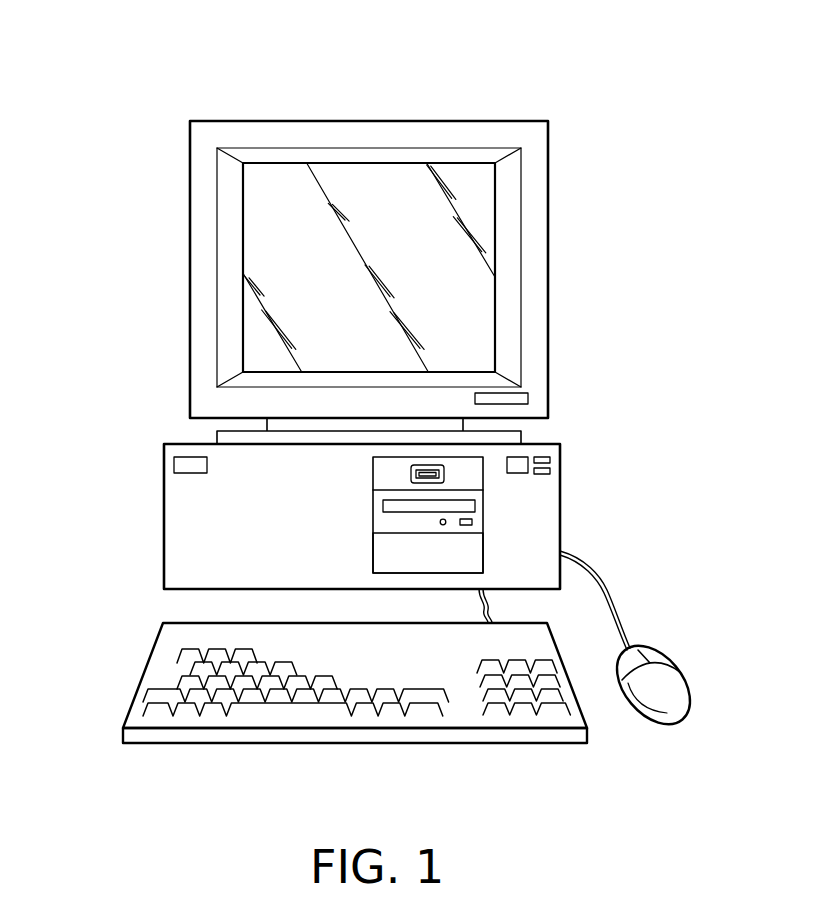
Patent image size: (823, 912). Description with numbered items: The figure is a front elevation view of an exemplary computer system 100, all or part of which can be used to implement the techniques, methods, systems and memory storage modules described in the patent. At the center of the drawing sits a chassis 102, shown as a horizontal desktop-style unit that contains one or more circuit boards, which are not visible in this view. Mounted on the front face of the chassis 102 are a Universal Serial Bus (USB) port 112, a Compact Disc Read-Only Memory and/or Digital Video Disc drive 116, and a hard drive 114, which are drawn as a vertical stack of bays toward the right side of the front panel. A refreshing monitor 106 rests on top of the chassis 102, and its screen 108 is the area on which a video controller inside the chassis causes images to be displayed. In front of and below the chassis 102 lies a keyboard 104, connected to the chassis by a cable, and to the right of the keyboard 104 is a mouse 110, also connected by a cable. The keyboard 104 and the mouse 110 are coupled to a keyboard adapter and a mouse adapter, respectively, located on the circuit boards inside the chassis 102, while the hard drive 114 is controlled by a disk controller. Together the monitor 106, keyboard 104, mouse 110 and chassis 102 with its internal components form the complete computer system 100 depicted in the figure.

The computer system 100 is at (541, 97).
The chassis 102 is at (163, 518).
The keyboard 104 is at (147, 668).
The refreshing monitor 106 is at (260, 121).
The screen 108 is at (288, 272).
The mouse 110 is at (673, 674).
The Universal Serial Bus (USB) port 112 is at (447, 470).
The hard drive 114 is at (476, 552).
The Compact Disc Read-Only Memory (CD-ROM) and/or Digital Video Disc (DVD) drive 116 is at (476, 511).